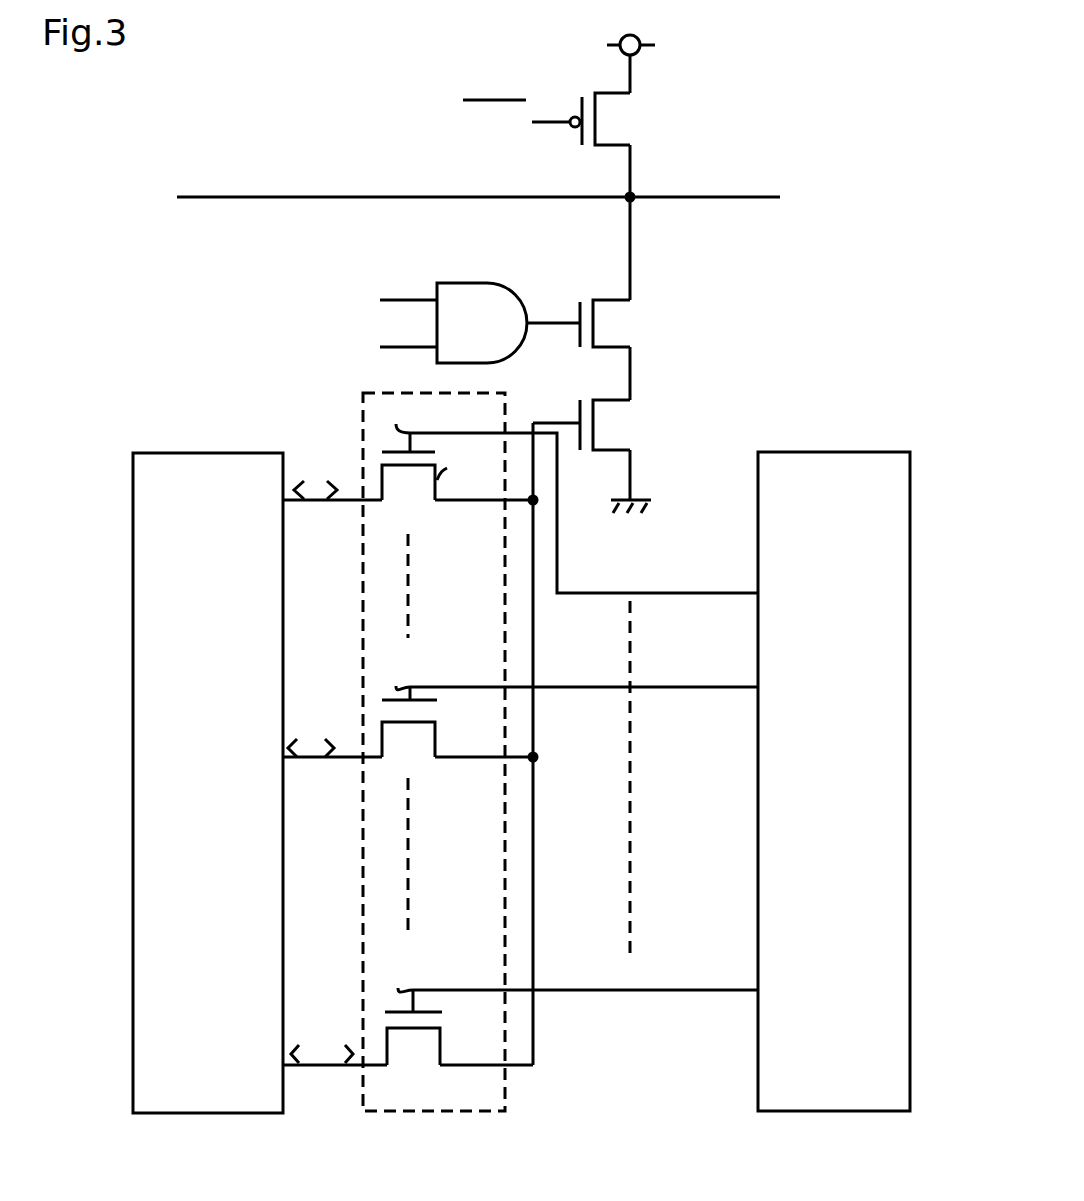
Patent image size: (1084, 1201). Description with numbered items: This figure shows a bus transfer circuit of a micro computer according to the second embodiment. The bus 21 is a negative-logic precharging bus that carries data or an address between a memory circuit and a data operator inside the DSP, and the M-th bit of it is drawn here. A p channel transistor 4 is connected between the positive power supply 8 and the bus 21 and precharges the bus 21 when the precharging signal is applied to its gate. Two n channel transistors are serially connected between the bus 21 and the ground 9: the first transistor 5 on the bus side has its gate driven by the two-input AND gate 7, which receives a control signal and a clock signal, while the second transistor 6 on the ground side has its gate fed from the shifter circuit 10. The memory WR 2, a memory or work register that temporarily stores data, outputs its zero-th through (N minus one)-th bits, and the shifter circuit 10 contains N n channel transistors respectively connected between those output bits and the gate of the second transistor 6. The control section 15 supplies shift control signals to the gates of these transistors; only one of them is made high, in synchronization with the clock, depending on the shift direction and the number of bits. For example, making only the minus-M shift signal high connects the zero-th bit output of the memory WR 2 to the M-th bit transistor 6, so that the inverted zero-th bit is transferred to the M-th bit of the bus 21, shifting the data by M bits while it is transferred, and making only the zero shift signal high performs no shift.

The memory WR 2 is at (180, 1114).
The p channel transistor 4 is at (622, 130).
The first transistor 5 is at (620, 332).
The second transistor 6 is at (620, 435).
The two-input AND gate 7 is at (493, 283).
The positive power supply 8 is at (655, 45).
The ground 9 is at (646, 518).
The shifter circuit 10 is at (497, 1104).
The control section 15 is at (820, 1112).
The bus 21 is at (703, 195).